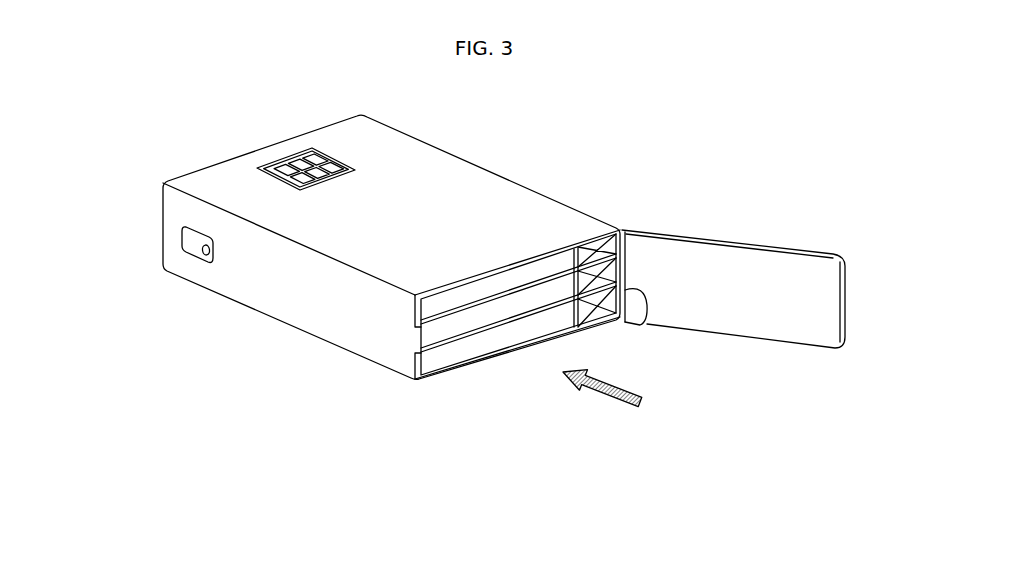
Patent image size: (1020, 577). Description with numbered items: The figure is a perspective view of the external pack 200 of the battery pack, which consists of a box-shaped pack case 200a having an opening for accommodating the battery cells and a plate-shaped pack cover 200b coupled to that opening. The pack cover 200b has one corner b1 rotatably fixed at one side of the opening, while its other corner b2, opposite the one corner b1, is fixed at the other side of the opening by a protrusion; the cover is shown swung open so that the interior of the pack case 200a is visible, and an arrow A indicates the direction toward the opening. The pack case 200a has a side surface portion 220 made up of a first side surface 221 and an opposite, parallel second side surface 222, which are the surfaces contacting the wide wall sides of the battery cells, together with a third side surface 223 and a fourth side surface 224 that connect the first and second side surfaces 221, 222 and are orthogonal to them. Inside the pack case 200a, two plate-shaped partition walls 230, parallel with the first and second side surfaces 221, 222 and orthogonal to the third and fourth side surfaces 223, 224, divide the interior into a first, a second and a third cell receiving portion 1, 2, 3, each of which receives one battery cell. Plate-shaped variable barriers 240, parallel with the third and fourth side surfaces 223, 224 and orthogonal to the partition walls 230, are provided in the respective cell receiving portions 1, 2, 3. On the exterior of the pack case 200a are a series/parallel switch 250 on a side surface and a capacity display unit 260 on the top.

The external pack 200 is at (715, 128).
The pack case 200a is at (367, 150).
The pack cover 200b is at (765, 258).
The capacity display unit 260 is at (282, 160).
The series/parallel switch 250 is at (180, 240).
The side surface portion 220 is at (543, 437).
The first side surface 221 is at (392, 270).
The fourth side surface 224 is at (399, 350).
The second side surface 222 is at (443, 363).
The third side surface 223 is at (580, 300).
The partition wall 230 is at (535, 297).
The variable barriers 240 is at (565, 255).
The first cell receiving portion 1 is at (440, 308).
The second cell receiving portion 2 is at (473, 327).
The third cell receiving portion 3 is at (486, 348).
The one corner b1 is at (645, 323).
The other corner b2 is at (845, 317).
The insertion direction A is at (608, 394).